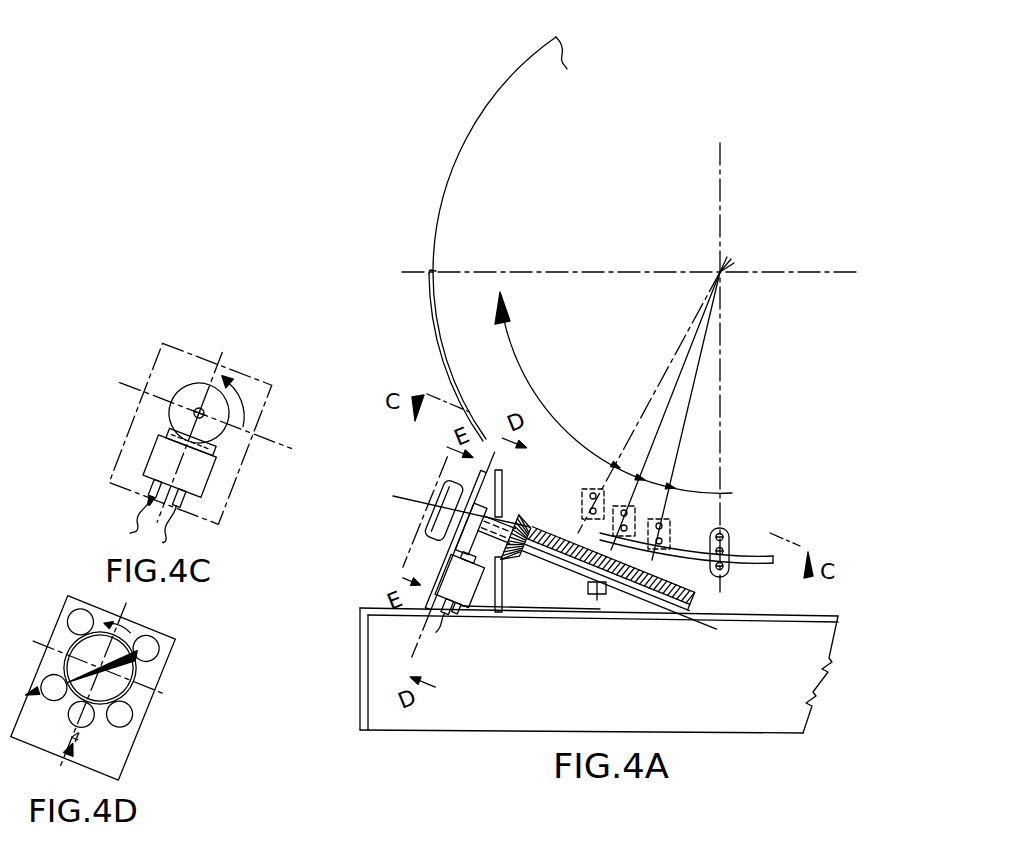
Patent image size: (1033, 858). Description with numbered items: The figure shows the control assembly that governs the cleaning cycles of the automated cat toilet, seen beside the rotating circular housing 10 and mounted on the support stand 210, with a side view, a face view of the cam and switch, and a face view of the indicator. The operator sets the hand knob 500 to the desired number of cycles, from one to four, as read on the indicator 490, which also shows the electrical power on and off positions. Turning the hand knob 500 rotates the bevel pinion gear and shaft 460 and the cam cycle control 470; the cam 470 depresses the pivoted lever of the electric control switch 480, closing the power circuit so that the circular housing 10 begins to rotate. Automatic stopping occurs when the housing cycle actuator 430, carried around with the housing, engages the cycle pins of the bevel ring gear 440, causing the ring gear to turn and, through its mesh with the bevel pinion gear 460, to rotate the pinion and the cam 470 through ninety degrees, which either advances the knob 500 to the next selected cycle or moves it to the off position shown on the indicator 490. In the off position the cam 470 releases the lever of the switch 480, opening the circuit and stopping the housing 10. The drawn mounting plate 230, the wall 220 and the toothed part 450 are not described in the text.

In FIG. 4A, the circular housing 10 is at (437, 283).
In FIG. 4A, the support stand 210 is at (807, 617).
In FIG. 4A, the housing wall 220 is at (360, 650).
In FIG. 4A, the mounting plate 230 is at (503, 482).
In FIG. 4A, the housing cycle actuator 430 is at (728, 530).
In FIG. 4A, the bevel ring gear 440 is at (700, 590).
In FIG. 4A, the toothed rack 450 is at (628, 600).
In FIG. 4A, the bevel pinion gear and shaft 460 is at (505, 578).
In FIG. 4A, the cam cycle control 470 is at (490, 508).
In FIG. 4C, the cam cycle control 470 is at (168, 412).
In FIG. 4A, the electric control switch 480 is at (452, 602).
In FIG. 4C, the electric control switch 480 is at (152, 452).
In FIG. 4A, the indicator 490 is at (417, 610).
In FIG. 4D, the indicator 490 is at (163, 677).
In FIG. 4A, the hand knob 500 is at (433, 519).
In FIG. 4D, the hand knob 500 is at (140, 690).